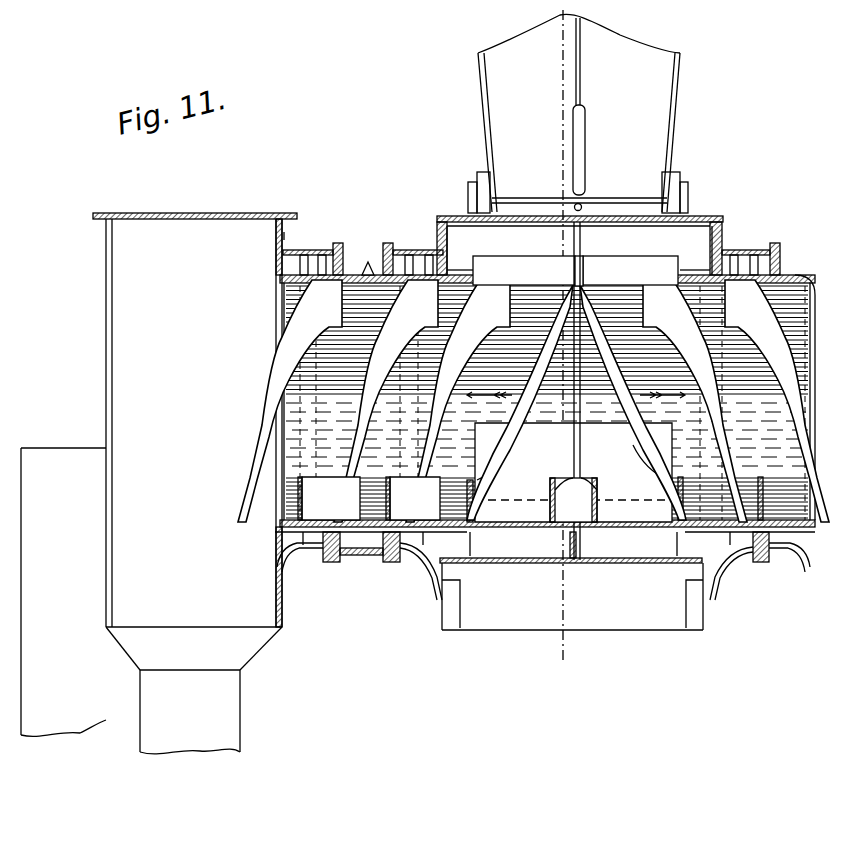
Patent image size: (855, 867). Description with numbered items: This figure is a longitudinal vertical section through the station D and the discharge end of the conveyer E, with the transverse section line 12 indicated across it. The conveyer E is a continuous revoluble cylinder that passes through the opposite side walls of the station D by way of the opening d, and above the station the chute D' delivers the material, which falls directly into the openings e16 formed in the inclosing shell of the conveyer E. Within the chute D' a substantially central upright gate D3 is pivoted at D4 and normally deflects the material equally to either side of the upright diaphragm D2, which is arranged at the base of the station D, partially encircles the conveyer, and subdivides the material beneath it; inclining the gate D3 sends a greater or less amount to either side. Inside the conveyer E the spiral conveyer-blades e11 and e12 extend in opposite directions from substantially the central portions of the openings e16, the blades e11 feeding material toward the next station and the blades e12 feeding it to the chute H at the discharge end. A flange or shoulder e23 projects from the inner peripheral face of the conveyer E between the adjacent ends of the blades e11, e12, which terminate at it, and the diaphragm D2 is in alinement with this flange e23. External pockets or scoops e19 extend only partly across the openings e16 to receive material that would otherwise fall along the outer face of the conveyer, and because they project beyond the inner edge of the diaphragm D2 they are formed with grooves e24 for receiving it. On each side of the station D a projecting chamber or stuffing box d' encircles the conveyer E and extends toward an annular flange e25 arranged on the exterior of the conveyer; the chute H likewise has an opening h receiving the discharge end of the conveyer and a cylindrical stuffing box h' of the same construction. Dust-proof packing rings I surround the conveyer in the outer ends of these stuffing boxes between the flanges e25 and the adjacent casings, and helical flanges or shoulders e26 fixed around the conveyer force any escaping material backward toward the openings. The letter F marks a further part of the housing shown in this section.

The section line 12— 12 is at (554, 659).
The opening h is at (159, 474).
The chute H is at (190, 712).
The stuffing box h' is at (301, 245).
The chute D' is at (588, 113).
The gate D3 is at (586, 140).
The pivot D4 is at (582, 204).
The station D is at (580, 235).
The diaphragm D2 is at (584, 546).
The conveyer E is at (800, 282).
The divider F is at (364, 260).
The packing rings I is at (345, 541).
The opening d is at (579, 251).
The stuffing box d' is at (581, 416).
The conveyer-blades e11 is at (734, 401).
The conveyer-blades e12 is at (375, 401).
The openings e16 is at (598, 440).
The pockets or scoops e19 is at (536, 266).
The flange or shoulder e23 is at (572, 486).
The grooves e24 is at (582, 266).
The annular flanges e25 is at (345, 256).
The helical flanges or shoulders e26 is at (322, 262).